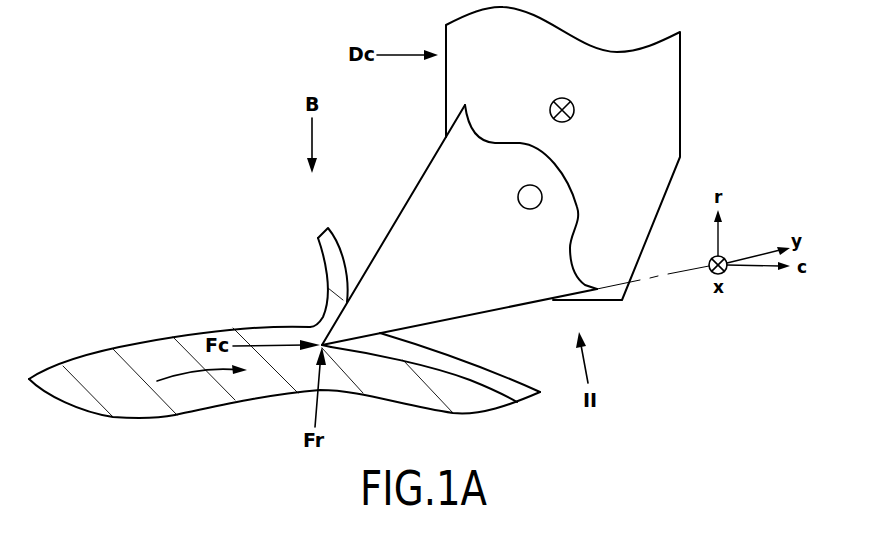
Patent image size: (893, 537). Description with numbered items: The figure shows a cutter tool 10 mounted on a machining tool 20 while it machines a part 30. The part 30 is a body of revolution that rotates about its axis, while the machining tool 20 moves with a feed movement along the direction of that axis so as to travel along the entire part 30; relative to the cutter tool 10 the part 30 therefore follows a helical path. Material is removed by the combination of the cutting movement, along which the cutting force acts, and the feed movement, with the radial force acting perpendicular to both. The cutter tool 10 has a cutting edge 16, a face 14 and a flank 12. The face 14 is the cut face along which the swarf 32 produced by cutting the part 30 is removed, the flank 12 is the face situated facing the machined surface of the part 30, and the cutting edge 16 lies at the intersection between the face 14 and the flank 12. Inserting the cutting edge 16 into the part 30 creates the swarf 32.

The cutter tool 10 is at (495, 249).
The flank 12 is at (493, 311).
The face 14 is at (418, 183).
The cutting edge 16 is at (318, 338).
The machining tool 20 is at (575, 69).
The part 30 is at (129, 396).
The swarf 32 is at (332, 252).